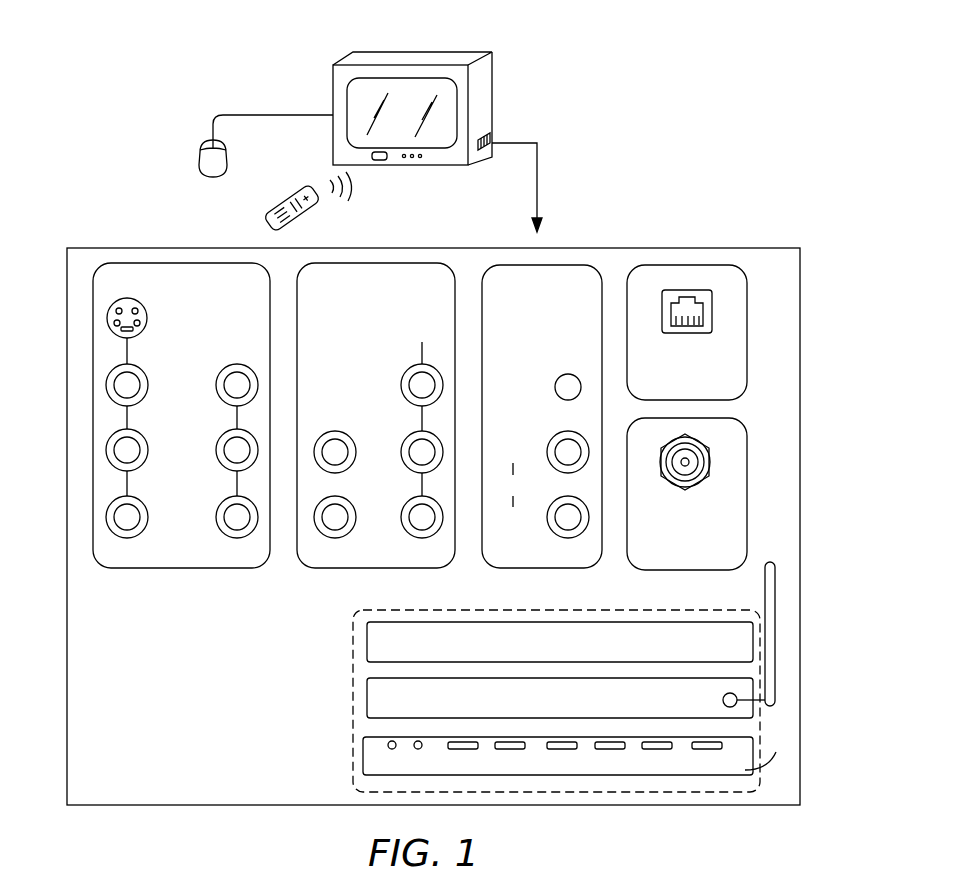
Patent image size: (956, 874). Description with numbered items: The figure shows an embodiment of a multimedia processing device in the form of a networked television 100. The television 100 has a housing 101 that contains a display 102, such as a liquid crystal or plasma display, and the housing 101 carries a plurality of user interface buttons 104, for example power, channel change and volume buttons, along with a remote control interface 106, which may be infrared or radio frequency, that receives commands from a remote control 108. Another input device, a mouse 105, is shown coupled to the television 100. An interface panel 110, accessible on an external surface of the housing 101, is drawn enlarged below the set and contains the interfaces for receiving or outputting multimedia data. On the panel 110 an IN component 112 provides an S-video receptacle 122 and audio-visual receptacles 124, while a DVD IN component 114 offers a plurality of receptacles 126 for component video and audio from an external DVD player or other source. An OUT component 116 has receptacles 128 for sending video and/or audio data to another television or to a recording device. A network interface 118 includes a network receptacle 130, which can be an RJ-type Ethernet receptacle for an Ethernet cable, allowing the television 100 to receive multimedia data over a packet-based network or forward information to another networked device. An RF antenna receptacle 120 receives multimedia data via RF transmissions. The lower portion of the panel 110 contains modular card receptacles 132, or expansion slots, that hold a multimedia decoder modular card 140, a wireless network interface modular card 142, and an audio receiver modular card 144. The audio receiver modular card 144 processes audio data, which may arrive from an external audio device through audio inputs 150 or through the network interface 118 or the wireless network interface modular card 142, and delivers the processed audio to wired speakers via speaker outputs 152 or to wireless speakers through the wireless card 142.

The networked television 100 is at (515, 29).
The housing 101 is at (494, 70).
The display 102 is at (457, 98).
The user interface buttons 104 is at (426, 168).
The mouse 105 is at (199, 155).
The remote control interface 106 is at (382, 161).
The remote control 108 is at (302, 195).
The interface panel 110 is at (488, 136).
The IN component 112 is at (130, 569).
The DVD IN component 114 is at (325, 569).
The OUT component 116 is at (594, 566).
The network interface 118 is at (747, 335).
The RF antenna receptacle 120 is at (747, 495).
The S-video receptacle 122 is at (149, 318).
The audio-visual receptacles 124 is at (197, 364).
The receptacles 126 is at (375, 426).
The receptacles 128 is at (555, 346).
The network receptacle 130 is at (689, 290).
The modular card receptacles 132 is at (295, 610).
The multimedia decoder modular card 140 is at (367, 643).
The wireless network interface modular card 142 is at (367, 700).
The audio receiver modular card 144 is at (363, 750).
The audio inputs 150 is at (389, 741).
The speaker outputs 152 is at (768, 751).